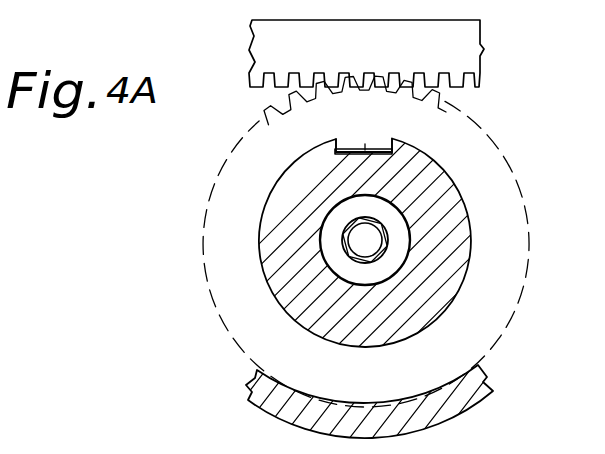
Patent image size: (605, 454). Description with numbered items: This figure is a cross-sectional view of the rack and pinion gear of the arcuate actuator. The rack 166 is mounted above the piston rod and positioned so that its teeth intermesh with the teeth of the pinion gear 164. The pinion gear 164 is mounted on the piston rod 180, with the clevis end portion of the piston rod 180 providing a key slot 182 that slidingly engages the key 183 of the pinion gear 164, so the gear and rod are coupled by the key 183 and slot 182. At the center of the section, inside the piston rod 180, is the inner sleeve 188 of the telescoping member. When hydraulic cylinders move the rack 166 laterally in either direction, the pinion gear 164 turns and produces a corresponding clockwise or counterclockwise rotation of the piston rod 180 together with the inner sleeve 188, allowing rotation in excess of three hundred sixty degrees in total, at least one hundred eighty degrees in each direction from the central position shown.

The rack 166 is at (463, 52).
The pinion gear 164 is at (497, 296).
The piston rod 180 is at (443, 259).
The key slot 182 is at (363, 156).
The key 183 is at (368, 158).
The inner sleeve 188 is at (388, 222).